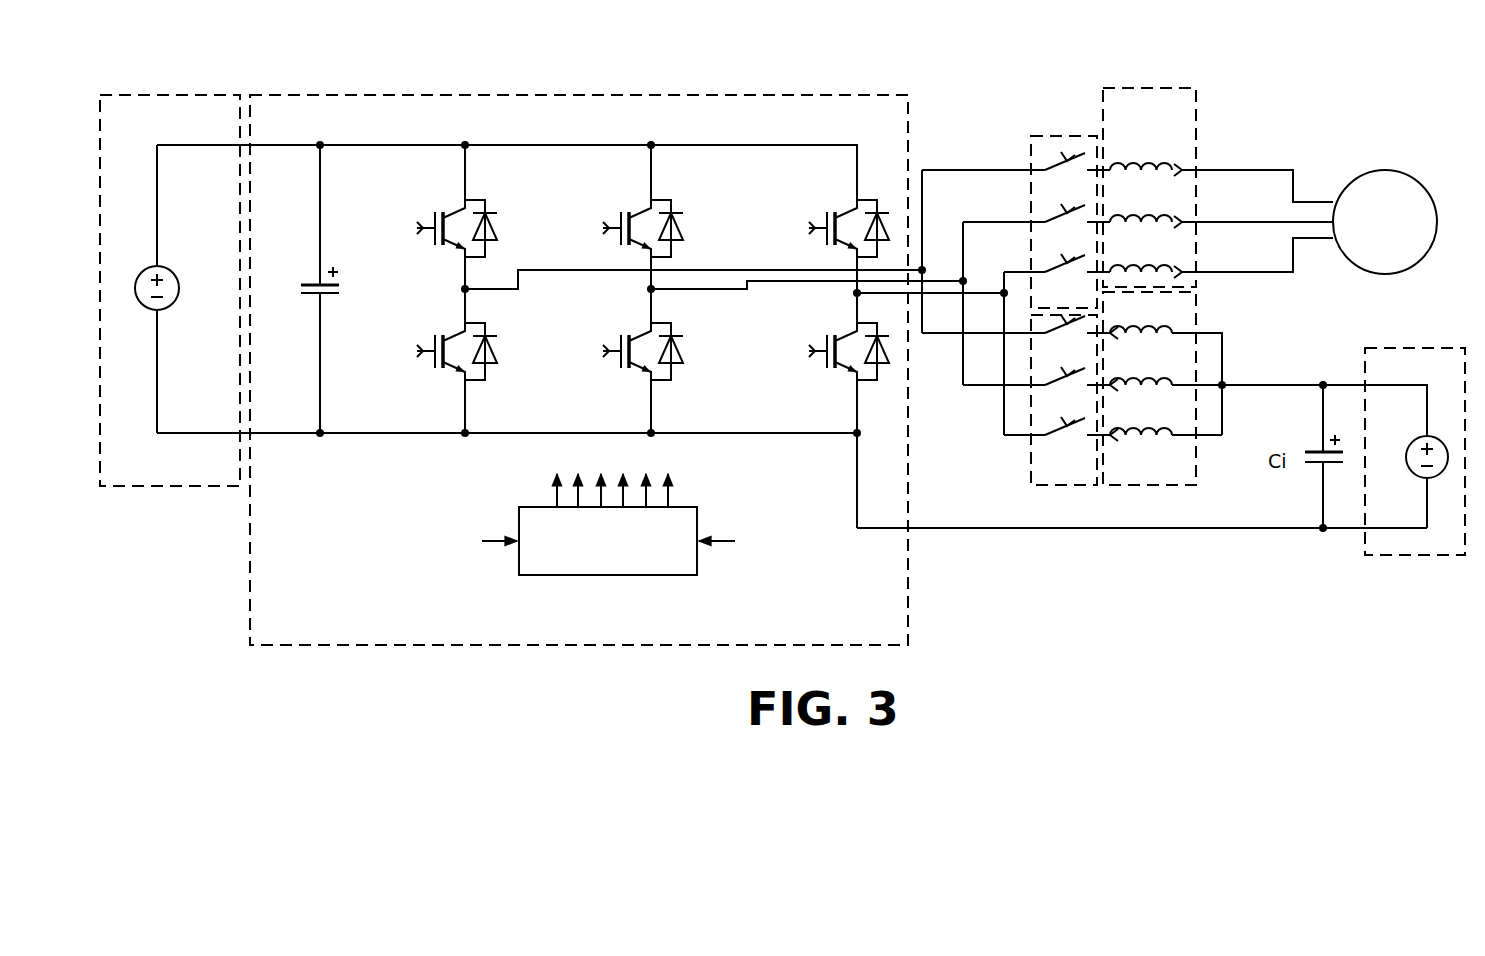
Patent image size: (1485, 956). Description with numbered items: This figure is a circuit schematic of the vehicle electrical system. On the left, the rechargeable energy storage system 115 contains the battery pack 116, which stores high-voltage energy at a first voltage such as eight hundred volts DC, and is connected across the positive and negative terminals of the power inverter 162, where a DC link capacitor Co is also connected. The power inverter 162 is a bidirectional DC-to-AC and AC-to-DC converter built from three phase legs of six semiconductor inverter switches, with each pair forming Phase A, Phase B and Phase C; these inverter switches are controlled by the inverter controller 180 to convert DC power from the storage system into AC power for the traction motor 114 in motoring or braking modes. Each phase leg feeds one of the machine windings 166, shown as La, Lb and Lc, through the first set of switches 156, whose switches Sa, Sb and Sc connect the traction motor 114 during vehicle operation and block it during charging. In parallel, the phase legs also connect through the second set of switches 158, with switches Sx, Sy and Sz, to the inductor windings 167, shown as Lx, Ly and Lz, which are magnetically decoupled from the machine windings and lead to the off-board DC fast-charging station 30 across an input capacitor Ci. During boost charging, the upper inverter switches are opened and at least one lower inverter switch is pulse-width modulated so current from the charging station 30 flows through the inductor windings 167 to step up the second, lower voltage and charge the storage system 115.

The rechargeable energy storage system 115 is at (185, 95).
The battery pack 116 is at (167, 268).
The power inverter 162 is at (641, 93).
The inverter controller 180 is at (608, 524).
The first set of switches 156 is at (1060, 135).
The second set of switches 158 is at (1050, 486).
The machine windings 166 is at (1176, 86).
The inductor windings 167 is at (1157, 490).
The traction motor 114 is at (1385, 222).
The off-board DC fast-charging station 30 is at (1409, 344).